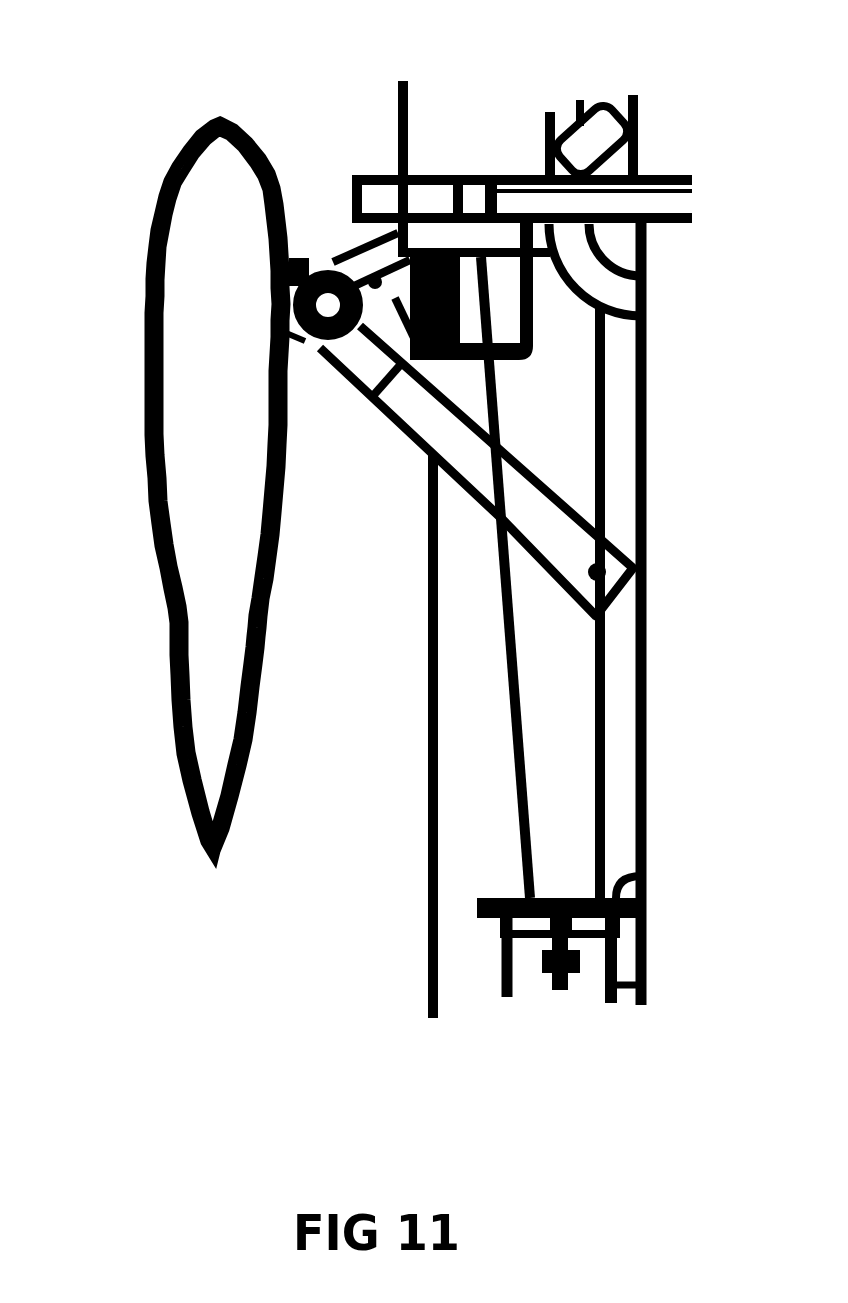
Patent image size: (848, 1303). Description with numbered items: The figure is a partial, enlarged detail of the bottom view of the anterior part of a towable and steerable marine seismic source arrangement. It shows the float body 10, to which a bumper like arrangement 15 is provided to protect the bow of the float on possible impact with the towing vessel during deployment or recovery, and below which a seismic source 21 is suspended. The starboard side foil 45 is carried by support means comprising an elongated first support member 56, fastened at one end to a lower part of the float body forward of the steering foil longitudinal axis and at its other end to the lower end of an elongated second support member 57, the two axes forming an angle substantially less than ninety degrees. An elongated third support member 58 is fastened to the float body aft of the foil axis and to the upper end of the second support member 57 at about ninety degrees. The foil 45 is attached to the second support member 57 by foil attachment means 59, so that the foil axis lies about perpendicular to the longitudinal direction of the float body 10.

The float body 10 is at (432, 845).
The bumper like arrangement 15 is at (583, 283).
The seismic source 21 is at (445, 140).
The starboard side foil 45 is at (207, 463).
The elongated first support member 56 is at (493, 460).
The elongated second support member 57 is at (207, 297).
The elongated third support member 58 is at (597, 160).
The foil attachment means 59 is at (300, 337).